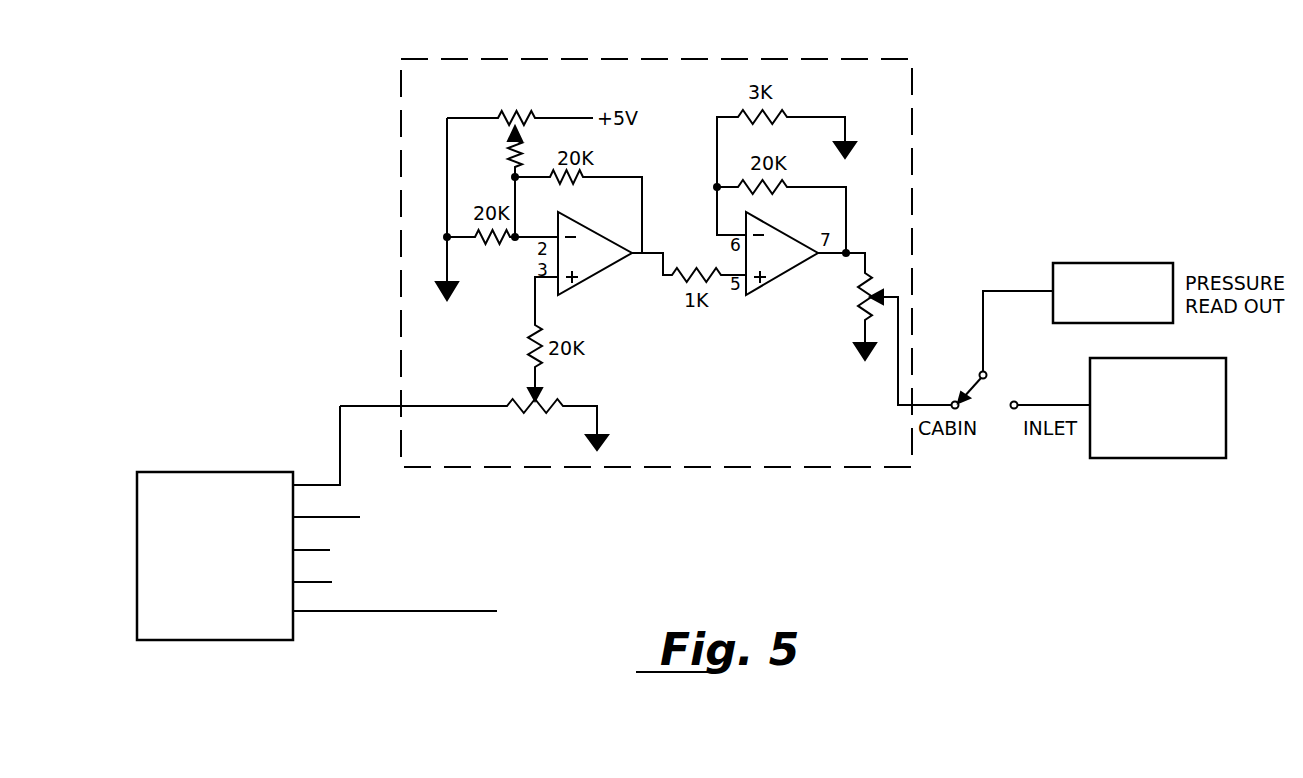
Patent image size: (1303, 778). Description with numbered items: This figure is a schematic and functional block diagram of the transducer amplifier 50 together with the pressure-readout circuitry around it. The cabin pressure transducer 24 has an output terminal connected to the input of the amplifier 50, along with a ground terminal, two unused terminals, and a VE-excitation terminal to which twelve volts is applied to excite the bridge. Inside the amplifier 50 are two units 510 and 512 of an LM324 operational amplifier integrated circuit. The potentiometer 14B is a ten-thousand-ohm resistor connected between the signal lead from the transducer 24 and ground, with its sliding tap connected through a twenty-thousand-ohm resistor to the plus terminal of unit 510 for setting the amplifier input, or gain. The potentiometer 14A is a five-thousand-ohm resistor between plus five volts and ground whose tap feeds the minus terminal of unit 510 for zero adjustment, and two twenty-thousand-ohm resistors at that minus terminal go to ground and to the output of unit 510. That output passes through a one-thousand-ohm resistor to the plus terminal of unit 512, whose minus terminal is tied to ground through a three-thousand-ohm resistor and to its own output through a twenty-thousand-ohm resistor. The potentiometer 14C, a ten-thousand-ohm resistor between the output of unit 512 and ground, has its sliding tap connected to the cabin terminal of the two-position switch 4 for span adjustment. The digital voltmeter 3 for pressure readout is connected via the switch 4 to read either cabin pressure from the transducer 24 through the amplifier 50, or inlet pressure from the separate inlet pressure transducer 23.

The amplifier 50 is at (600, 59).
The potentiometer 14A is at (500, 116).
The potentiometer 14B is at (540, 402).
The potentiometer 14C is at (851, 292).
The op amp unit 510 is at (573, 223).
The op amp unit 512 is at (760, 226).
The digital voltmeter 3 is at (1128, 263).
The two-position switch 4 is at (978, 378).
The pressure transducer 23 is at (1178, 358).
The cabin pressure transducer 24 is at (193, 472).